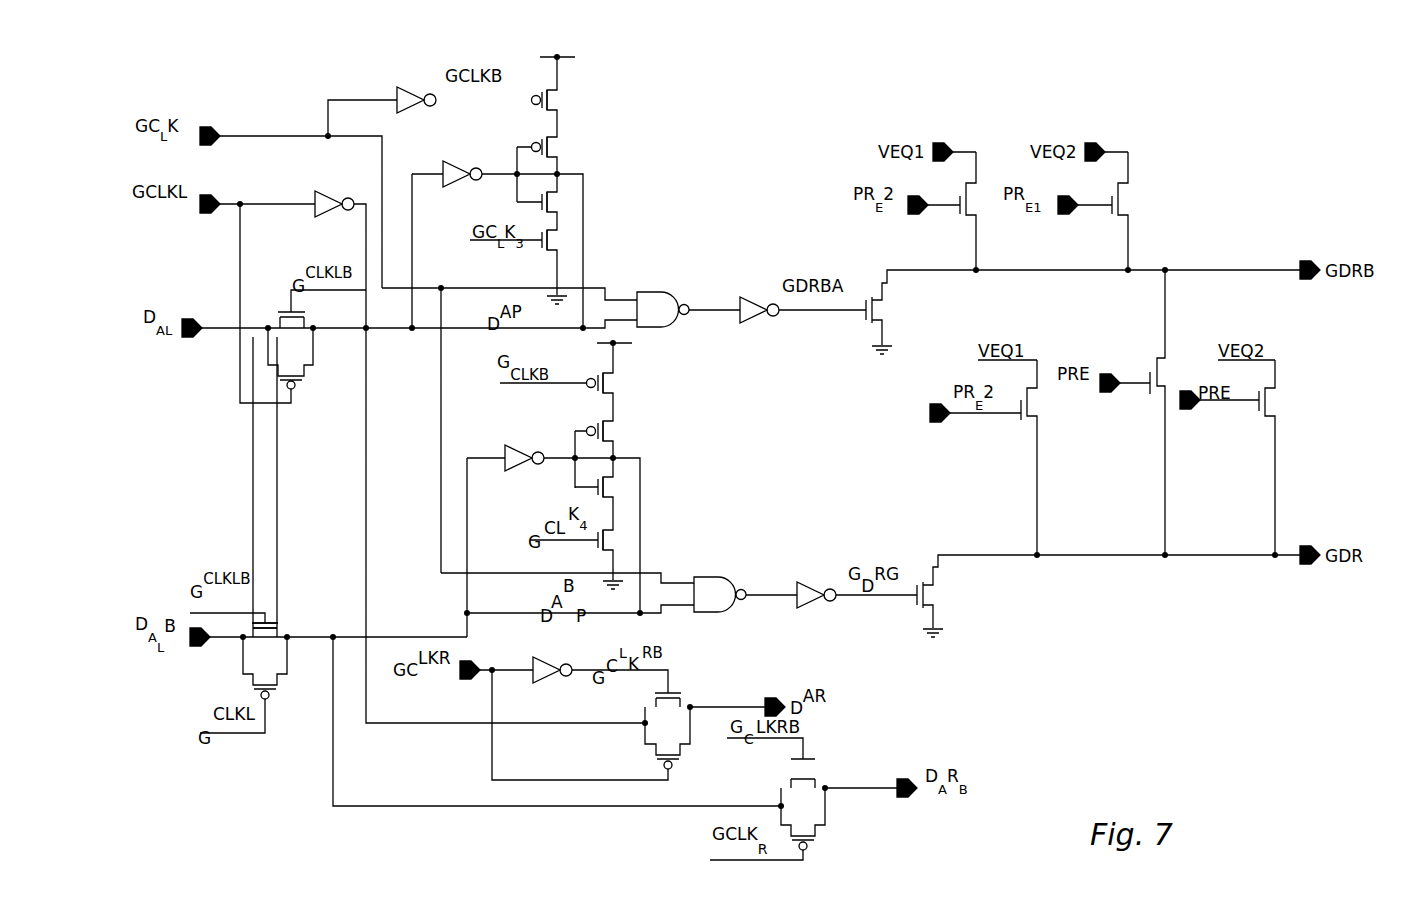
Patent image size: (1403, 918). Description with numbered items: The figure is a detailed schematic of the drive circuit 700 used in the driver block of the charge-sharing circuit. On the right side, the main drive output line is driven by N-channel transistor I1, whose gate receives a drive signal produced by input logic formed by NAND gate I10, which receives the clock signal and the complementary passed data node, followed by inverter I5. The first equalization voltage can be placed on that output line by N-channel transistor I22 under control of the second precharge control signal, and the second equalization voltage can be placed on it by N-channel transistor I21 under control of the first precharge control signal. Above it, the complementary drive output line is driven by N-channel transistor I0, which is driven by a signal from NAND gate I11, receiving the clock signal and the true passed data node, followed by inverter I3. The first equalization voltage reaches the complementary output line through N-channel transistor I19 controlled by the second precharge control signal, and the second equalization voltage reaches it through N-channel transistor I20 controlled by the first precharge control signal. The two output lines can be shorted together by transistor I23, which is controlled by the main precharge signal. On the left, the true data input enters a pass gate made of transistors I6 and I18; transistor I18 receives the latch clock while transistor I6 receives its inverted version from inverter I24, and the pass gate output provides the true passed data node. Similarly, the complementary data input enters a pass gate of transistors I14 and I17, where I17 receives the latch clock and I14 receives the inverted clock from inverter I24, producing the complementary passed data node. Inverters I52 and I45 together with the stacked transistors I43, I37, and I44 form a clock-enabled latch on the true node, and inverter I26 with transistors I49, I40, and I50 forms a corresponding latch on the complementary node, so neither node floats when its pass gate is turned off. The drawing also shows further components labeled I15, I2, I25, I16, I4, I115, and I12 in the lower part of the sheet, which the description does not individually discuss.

The sense amplifier driver circuit 700 is at (179, 82).
The inverter I52 is at (404, 86).
The inverter I24 is at (319, 191).
The inverter I45 is at (450, 161).
The inverter I26 is at (513, 446).
The inverter I3 is at (750, 296).
The inverter I5 is at (807, 583).
The inverter I25 is at (537, 654).
The NAND gate I11 is at (651, 291).
The NAND gate I10 is at (709, 578).
The transistor I43 is at (530, 81).
The transistor I37 is at (532, 131).
The NMOS transistor I15 is at (538, 205).
The transistor I44 is at (528, 256).
The transistor I49 is at (587, 364).
The transistor I40 is at (587, 417).
The NMOS transistor I2 is at (595, 492).
The transistor I50 is at (590, 547).
The N-channel transistor I0 is at (1077, 312).
The N-channel transistor I1 is at (1102, 596).
The N-channel transistor I19 is at (953, 211).
The N-channel transistor I20 is at (1105, 211).
The N-channel transistor I22 is at (1014, 457).
The transistor I23 is at (1143, 412).
The N-channel transistor I21 is at (1253, 457).
The transistor I6 is at (309, 453).
The transistor I18 is at (303, 365).
The transistor I14 is at (282, 612).
The transistor I17 is at (275, 674).
The NMOS pass transistor I16 is at (683, 680).
The PMOS pass transistor I4 is at (670, 744).
The NMOS pass transistor I115 is at (820, 762).
The PMOS pass transistor I12 is at (807, 824).